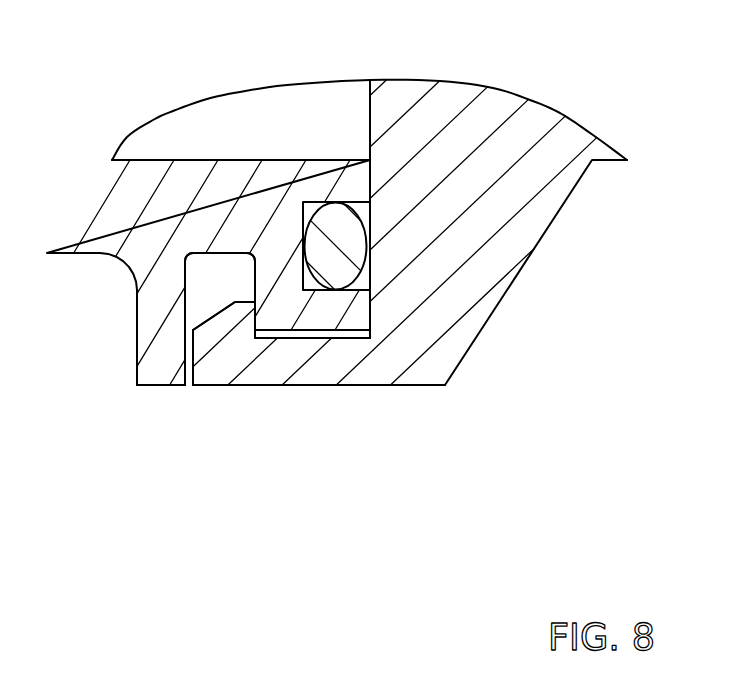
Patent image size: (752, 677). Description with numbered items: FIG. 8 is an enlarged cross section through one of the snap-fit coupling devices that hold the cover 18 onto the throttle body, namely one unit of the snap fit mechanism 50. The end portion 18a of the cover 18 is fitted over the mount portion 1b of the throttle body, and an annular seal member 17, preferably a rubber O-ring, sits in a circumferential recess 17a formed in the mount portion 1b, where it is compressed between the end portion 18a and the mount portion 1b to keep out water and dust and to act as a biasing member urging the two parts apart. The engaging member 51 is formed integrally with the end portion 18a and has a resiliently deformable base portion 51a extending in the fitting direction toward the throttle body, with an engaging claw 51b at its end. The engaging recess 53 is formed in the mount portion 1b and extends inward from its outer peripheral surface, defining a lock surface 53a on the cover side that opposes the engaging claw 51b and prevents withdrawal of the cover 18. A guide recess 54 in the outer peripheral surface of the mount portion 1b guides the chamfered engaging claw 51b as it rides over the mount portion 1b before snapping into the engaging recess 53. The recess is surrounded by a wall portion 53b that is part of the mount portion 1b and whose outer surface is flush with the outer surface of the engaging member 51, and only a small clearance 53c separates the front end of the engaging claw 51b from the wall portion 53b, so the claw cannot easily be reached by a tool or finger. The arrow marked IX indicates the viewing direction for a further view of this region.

The mount portion 1b is at (112, 223).
The end portion 18a is at (470, 279).
The cover 18 is at (432, 232).
The circumferential recess 17a is at (312, 202).
The seal member 17 is at (343, 233).
The engaging recess 53 is at (213, 291).
The lock surface 53a is at (252, 285).
The wall portion 53b is at (158, 368).
The clearance 53c is at (190, 377).
The engaging claw 51b is at (217, 330).
The engaging member 51 is at (257, 378).
The base portion 51a is at (320, 363).
The guide recess 54 is at (350, 338).
The snap fit mechanism 50 is at (217, 460).
The section view arrow IX is at (287, 510).